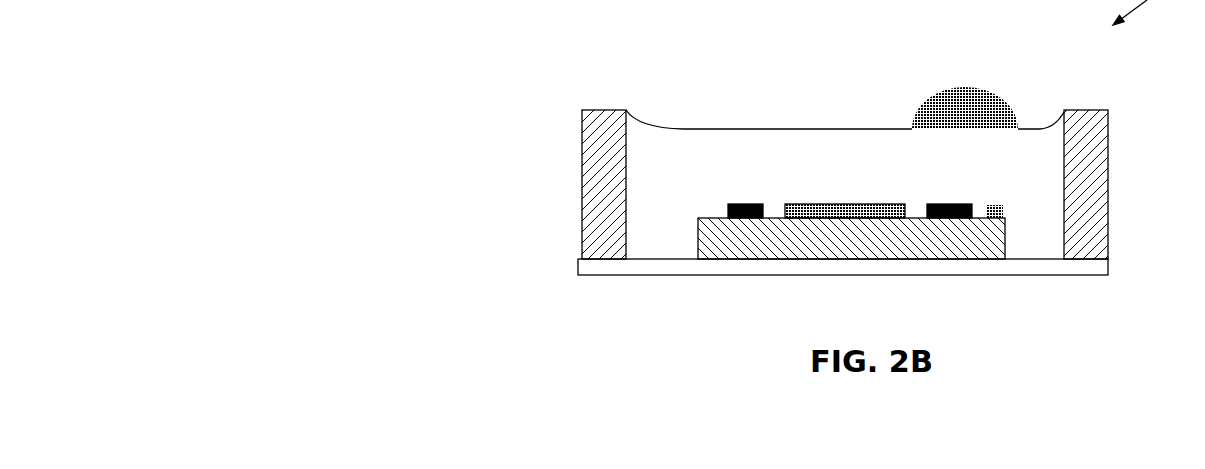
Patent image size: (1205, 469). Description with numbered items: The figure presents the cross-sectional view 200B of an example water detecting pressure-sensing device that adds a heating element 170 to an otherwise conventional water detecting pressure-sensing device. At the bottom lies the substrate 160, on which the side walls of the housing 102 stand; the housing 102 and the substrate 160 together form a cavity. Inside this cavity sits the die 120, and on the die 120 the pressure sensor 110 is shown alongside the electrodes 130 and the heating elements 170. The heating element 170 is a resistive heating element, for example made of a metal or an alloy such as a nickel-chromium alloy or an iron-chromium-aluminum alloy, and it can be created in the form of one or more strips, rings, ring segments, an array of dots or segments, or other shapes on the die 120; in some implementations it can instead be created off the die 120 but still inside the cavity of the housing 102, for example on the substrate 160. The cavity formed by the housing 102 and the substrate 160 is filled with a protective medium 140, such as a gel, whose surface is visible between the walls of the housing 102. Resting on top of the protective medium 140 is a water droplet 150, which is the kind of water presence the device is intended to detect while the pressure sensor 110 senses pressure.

The cross-sectional view 200B is at (540, 50).
The housing 102 is at (1117, 159).
The pressure sensor 110 is at (827, 193).
The die 120 is at (875, 253).
The electrodes 130 is at (737, 193).
The protective medium 140 is at (675, 198).
The water droplet 150 is at (1011, 93).
The substrate 160 is at (647, 288).
The heating element 170 is at (1012, 226).